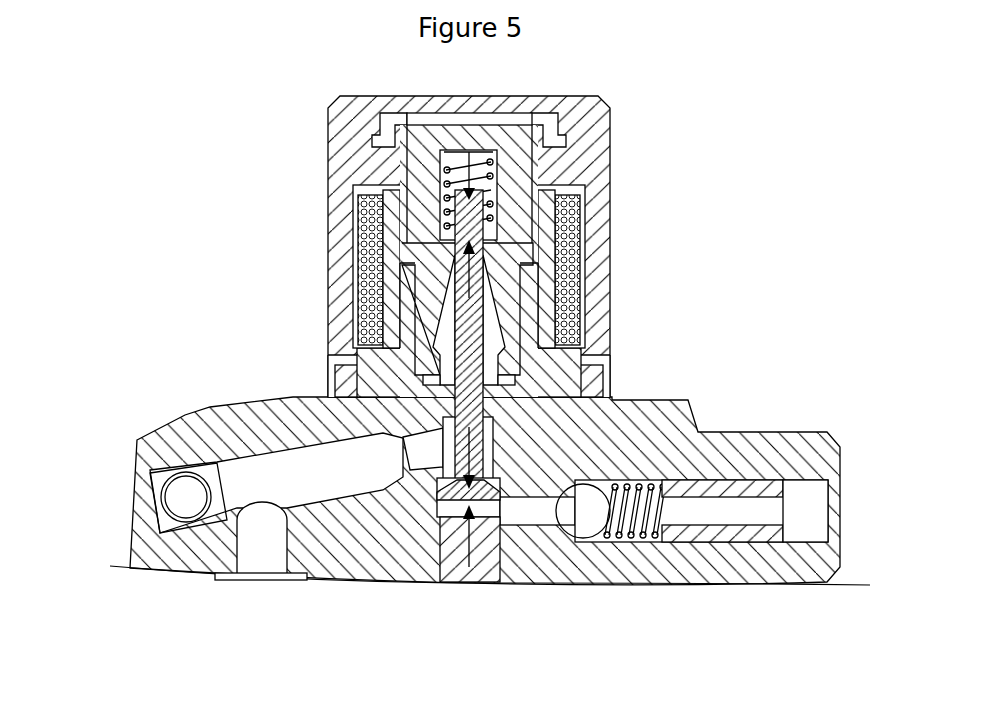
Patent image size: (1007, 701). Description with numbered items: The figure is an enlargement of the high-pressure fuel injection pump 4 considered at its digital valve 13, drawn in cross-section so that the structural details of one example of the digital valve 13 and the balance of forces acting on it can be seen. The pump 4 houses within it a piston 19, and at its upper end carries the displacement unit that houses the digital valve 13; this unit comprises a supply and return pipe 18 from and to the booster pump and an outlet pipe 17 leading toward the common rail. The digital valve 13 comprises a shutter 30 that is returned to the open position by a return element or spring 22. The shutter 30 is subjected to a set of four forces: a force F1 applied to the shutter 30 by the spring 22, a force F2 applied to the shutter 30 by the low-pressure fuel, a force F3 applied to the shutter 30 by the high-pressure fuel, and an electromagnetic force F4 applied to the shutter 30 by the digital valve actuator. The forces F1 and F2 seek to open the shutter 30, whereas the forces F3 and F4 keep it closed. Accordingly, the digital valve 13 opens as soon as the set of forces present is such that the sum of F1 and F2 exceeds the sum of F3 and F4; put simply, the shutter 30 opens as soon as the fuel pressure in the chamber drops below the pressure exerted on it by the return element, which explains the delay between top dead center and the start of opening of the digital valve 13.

The high-pressure fuel injection pump 4 is at (727, 580).
The digital valve 13 is at (532, 152).
The outlet pipe 17 is at (807, 513).
The supply and return pipe 18 is at (352, 463).
The piston 19 is at (485, 555).
The return element or spring 22 is at (445, 157).
The shutter 30 is at (455, 493).
The force applied to the shutter by the spring F1 is at (498, 180).
The force applied to the shutter by the low-pressure fuel F2 is at (330, 383).
The force applied to the shutter by the high-pressure fuel F3 is at (497, 520).
The electromagnetic force applied to the shutter by the digital valve actuator F4 is at (463, 282).